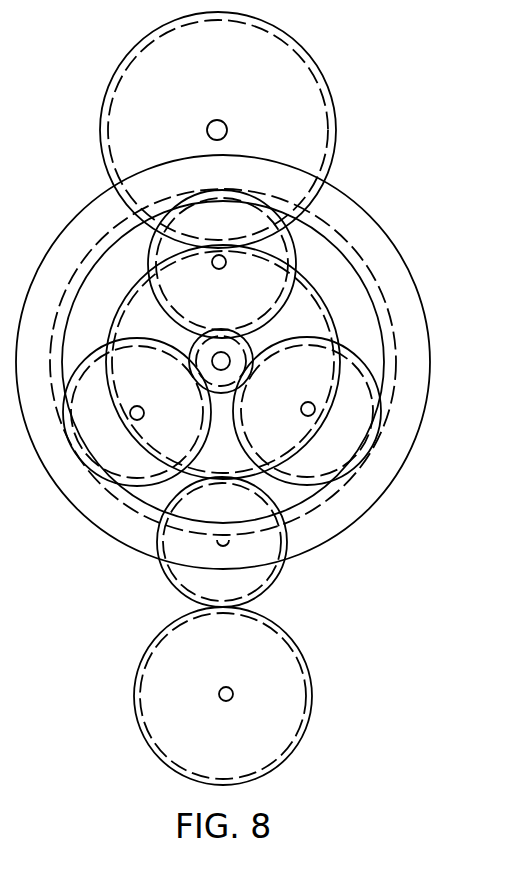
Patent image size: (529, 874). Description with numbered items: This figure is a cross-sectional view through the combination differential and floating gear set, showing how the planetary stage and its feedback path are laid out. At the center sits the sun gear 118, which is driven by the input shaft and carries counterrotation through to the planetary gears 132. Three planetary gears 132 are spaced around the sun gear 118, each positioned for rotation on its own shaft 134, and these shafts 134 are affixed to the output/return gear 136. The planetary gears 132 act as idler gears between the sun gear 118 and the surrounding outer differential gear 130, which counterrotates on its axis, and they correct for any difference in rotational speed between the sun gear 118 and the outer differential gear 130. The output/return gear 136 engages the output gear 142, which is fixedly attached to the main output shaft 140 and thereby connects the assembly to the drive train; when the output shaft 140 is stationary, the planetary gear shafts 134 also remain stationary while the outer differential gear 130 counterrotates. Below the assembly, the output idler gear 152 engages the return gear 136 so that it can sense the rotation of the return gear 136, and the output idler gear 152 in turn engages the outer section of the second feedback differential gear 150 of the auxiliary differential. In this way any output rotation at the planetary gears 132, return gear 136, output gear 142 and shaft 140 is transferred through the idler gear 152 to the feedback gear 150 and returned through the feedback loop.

The sun gear 118 is at (257, 343).
The outer differential gear 130 is at (95, 212).
The planetary gear 132 is at (293, 240).
The shaft 134 is at (217, 269).
The output/return gear 136 is at (128, 285).
The main output shaft 140 is at (213, 120).
The output gear 142 is at (318, 78).
The second feedback differential gear 150 is at (285, 648).
The output idler gear 152 is at (267, 577).